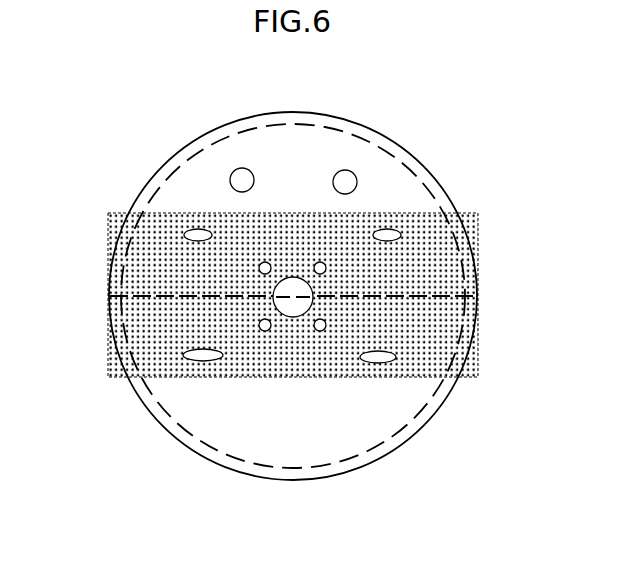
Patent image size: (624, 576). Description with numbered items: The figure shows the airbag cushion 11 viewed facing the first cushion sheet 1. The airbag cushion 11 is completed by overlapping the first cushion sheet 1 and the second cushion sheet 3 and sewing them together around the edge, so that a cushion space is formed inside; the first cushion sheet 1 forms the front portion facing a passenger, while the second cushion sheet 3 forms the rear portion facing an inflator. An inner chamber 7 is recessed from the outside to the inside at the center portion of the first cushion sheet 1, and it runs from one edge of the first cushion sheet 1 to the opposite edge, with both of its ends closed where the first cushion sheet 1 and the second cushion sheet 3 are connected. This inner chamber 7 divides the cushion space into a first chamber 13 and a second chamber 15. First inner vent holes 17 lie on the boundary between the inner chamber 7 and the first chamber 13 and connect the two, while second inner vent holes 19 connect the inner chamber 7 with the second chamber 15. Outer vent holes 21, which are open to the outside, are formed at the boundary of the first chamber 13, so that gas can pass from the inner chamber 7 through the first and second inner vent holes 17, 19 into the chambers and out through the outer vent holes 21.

The first cushion sheet 1 is at (248, 418).
The second cushion sheet 3 is at (196, 400).
The inner chamber 7 is at (155, 325).
The airbag cushion 11 is at (478, 229).
The first chamber 13 is at (385, 186).
The second chamber 15 is at (328, 408).
The first inner vent holes 17 is at (197, 233).
The second inner vent holes 19 is at (378, 357).
The outer vent holes 21 is at (345, 170).